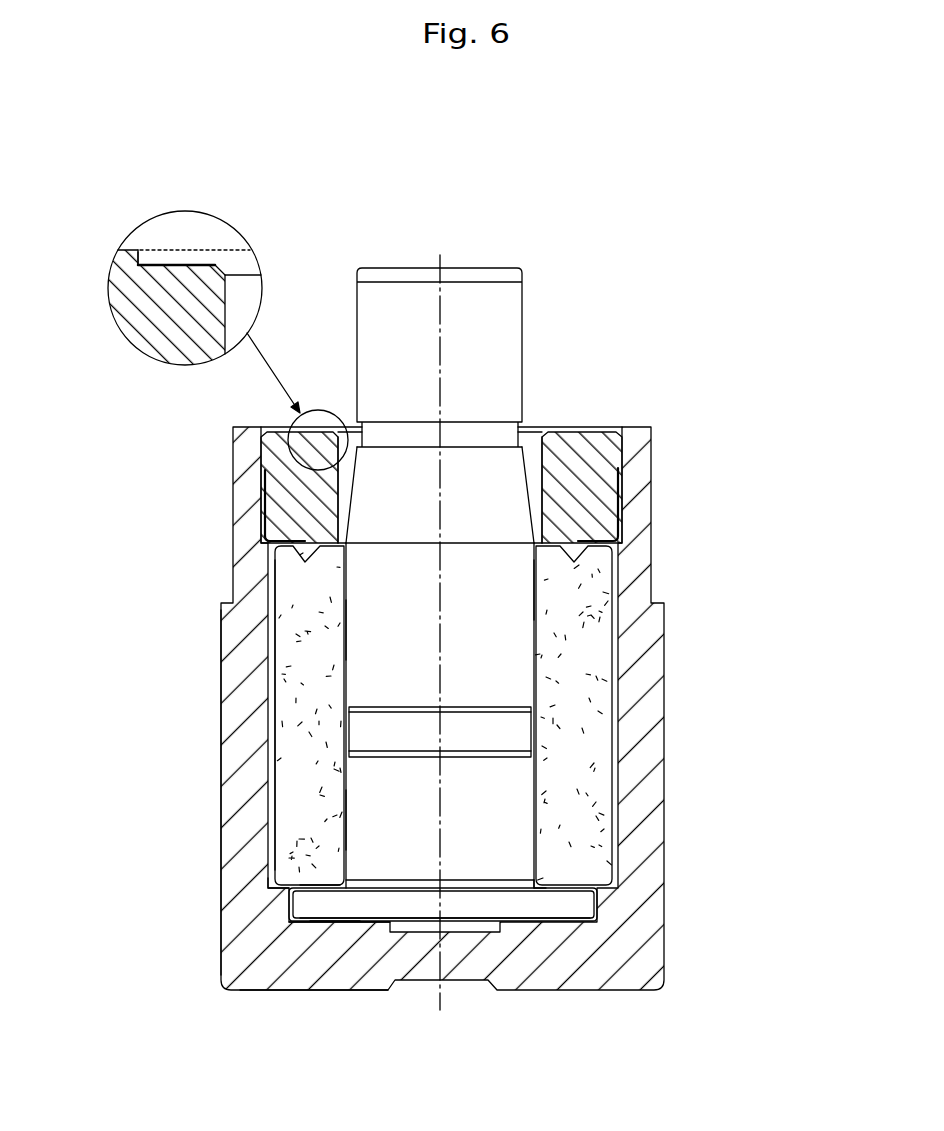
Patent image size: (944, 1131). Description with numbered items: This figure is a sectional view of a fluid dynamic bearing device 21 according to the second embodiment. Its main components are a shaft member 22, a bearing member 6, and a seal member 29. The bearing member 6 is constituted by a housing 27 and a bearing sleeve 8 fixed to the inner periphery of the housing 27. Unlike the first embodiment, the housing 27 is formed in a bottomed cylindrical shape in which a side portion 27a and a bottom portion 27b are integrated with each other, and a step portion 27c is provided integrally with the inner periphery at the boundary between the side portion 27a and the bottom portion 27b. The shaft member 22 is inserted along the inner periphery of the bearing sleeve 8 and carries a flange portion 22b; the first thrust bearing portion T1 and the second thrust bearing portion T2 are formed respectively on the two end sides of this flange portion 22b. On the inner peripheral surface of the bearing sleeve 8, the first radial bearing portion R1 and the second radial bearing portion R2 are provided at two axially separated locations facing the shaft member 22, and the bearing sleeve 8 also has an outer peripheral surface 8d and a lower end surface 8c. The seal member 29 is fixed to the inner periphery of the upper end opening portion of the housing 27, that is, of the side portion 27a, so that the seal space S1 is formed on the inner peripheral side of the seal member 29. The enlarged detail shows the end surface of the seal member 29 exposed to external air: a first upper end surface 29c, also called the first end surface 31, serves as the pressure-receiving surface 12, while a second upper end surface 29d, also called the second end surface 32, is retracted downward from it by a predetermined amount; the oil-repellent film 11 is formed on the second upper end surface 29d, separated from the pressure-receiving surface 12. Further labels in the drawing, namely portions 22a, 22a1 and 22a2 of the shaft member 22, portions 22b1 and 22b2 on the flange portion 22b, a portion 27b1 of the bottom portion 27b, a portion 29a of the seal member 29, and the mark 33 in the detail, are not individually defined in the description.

The fluid dynamic bearing device 21 is at (800, 448).
The shaft member 22 is at (526, 331).
The shaft body portion 22a is at (503, 653).
The outer peripheral surface of shaft body 22a1 is at (535, 587).
The tapered surface of shaft 22a2 is at (532, 518).
The flange portion 22b is at (585, 907).
The upper face of flange 22b1 is at (573, 878).
The lower face of flange 22b2 is at (556, 925).
The housing 27 is at (650, 735).
The side portion 27a is at (233, 734).
The bottom portion 27b is at (505, 968).
The bottom inner surface of housing 27b1 is at (368, 920).
The step portion 27c is at (268, 892).
The bearing member 6 is at (742, 713).
The bearing sleeve 8 is at (596, 777).
The lower end surface 8c is at (282, 905).
The outer peripheral surface 8d is at (268, 679).
The seal member 29 is at (592, 468).
The inner peripheral surface of stopper ring 29a is at (347, 452).
The first upper end surface 29c is at (124, 249).
The pressure-receiving surface 12 is at (117, 219).
The second upper end surface 29d is at (204, 250).
The second end surface 32 is at (269, 219).
The first end surface 31 is at (118, 248).
The top surface 33 is at (153, 249).
The oil-repellent film 11 is at (177, 252).
The seal space S1 is at (534, 455).
The first radial bearing portion R1 is at (340, 632).
The second radial bearing portion R2 is at (340, 816).
The first thrust bearing portion T1 is at (306, 884).
The second thrust bearing portion T2 is at (330, 925).